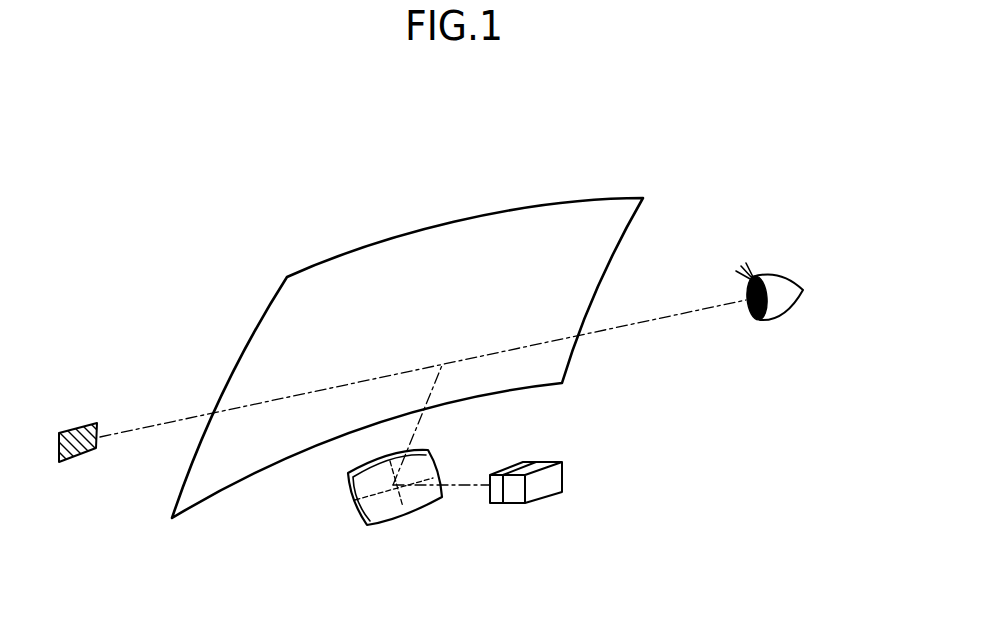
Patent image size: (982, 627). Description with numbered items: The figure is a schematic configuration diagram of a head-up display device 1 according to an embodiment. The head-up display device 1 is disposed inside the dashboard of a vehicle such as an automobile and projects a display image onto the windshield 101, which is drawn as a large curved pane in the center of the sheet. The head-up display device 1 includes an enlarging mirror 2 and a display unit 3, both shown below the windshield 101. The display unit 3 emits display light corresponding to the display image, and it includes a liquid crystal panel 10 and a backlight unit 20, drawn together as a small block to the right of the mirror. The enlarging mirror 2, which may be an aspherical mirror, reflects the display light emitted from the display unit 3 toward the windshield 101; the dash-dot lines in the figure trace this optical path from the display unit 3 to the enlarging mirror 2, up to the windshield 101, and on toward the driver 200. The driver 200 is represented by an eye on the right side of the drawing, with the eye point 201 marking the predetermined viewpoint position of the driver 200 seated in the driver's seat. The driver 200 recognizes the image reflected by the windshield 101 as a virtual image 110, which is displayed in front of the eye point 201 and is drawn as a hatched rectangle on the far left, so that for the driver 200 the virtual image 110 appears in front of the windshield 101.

The head-up display device 1 is at (256, 157).
The windshield 101 is at (542, 197).
The virtual image 110 is at (88, 424).
The enlarging mirror 2 is at (355, 516).
The display unit 3 is at (547, 516).
The liquid crystal panel 10 is at (495, 500).
The backlight unit 20 is at (553, 475).
The driver 200 is at (781, 259).
The eye point 201 is at (745, 298).